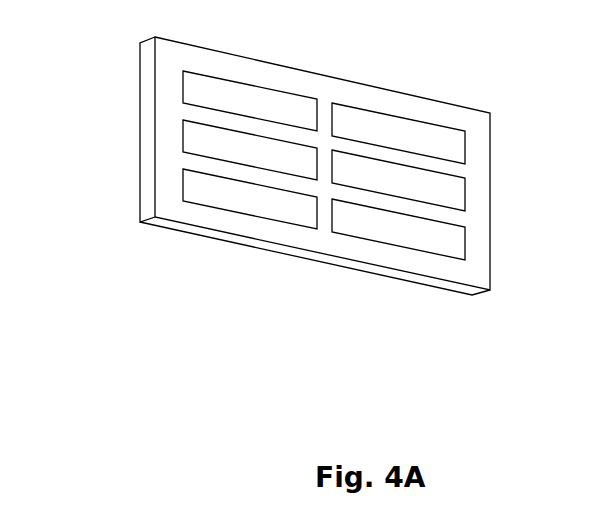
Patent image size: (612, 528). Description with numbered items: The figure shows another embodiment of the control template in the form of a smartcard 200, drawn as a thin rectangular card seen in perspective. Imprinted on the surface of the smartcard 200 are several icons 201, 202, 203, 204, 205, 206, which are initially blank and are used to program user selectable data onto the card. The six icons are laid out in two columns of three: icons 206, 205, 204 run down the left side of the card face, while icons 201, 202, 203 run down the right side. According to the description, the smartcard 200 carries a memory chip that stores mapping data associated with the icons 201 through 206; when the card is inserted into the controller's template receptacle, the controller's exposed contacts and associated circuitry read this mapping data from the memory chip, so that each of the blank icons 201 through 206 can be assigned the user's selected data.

The smartcard 200 is at (278, 243).
The icon 201 is at (388, 113).
The icon 202 is at (465, 187).
The icon 203 is at (465, 245).
The icon 204 is at (183, 195).
The icon 205 is at (183, 135).
The icon 206 is at (278, 92).